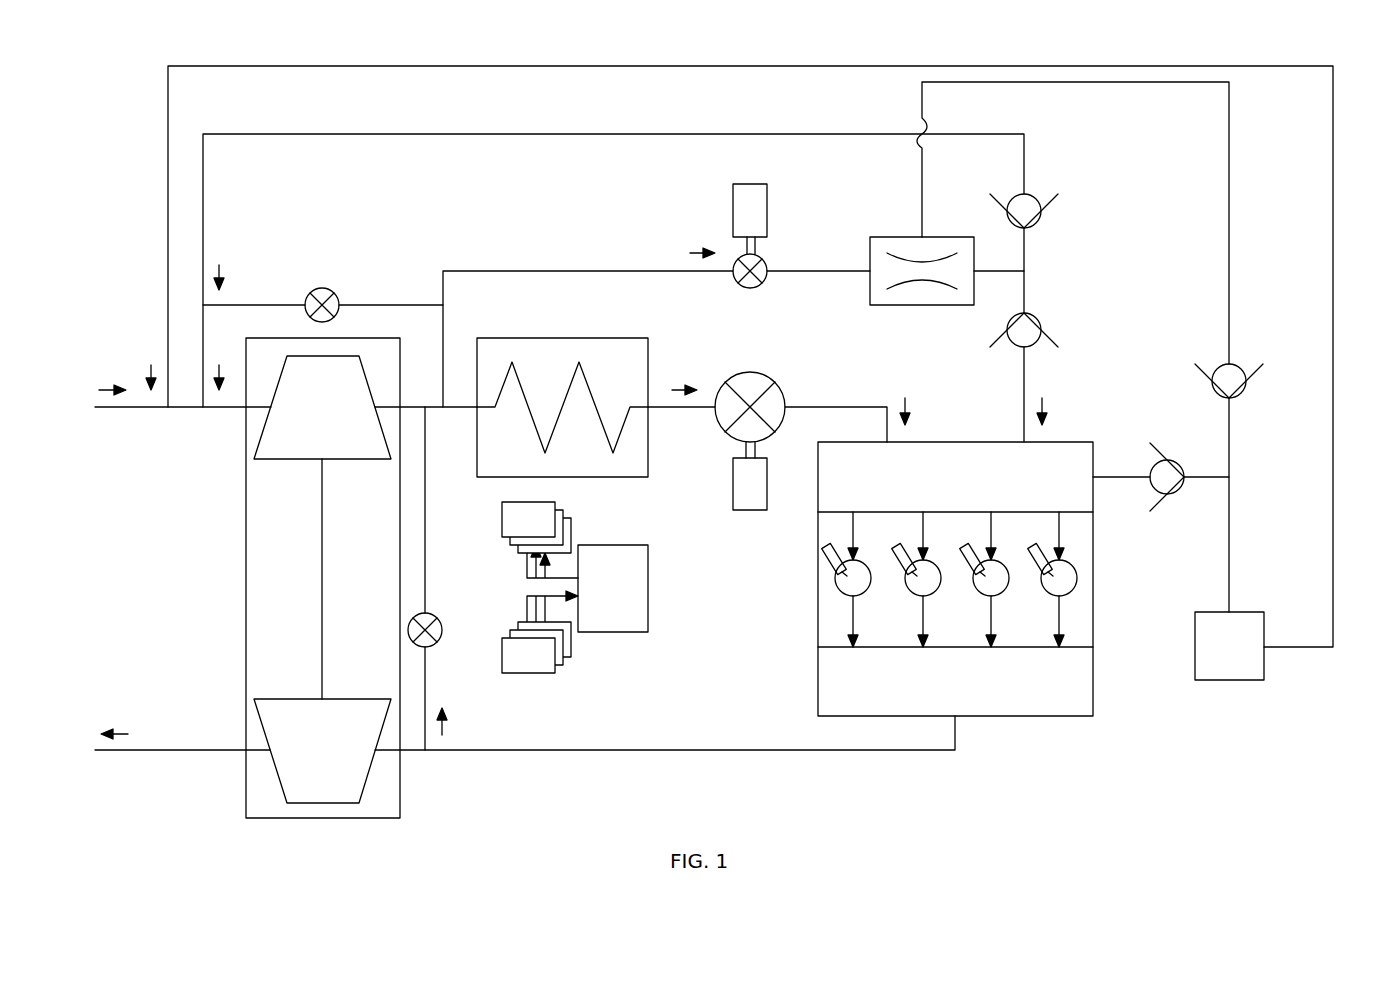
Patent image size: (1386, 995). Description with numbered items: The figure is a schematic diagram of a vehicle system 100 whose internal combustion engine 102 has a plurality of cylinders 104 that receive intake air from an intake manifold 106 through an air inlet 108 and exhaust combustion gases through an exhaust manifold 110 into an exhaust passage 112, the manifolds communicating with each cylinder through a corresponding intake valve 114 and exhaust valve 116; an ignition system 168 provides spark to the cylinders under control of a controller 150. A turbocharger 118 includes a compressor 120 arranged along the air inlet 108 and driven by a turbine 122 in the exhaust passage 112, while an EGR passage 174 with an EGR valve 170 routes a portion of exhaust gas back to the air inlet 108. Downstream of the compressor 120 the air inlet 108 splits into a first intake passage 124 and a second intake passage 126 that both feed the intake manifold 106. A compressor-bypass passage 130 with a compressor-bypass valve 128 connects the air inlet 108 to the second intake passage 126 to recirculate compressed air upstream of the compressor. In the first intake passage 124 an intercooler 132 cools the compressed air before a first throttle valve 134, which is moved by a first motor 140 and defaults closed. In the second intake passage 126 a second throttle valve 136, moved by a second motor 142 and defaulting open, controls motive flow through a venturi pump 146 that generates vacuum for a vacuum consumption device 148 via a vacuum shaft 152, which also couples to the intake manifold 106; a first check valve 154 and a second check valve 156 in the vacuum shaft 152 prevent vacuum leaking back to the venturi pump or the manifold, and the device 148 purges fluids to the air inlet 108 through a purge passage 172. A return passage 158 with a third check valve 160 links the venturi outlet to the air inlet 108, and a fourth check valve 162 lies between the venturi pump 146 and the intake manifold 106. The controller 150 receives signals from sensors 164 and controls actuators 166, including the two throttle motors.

The vehicle system 100 is at (114, 78).
The internal combustion engine 102 is at (1095, 612).
The cylinders 104 is at (1108, 563).
The intake manifold 106 is at (938, 488).
The air inlet 108 is at (133, 411).
The exhaust manifold 110 is at (938, 693).
The exhaust passage 112 is at (648, 751).
The intake valve 114 is at (855, 528).
The exhaust valve 116 is at (855, 611).
The turbocharger 118 is at (246, 587).
The compressor 120 is at (303, 418).
The turbine 122 is at (303, 761).
The first intake passage 124 is at (850, 405).
The second intake passage 126 is at (563, 270).
The compressor-bypass valve 128 is at (322, 288).
The compressor-bypass passage 130 is at (255, 303).
The intercooler 132 is at (558, 337).
The first throttle valve 134 is at (765, 376).
The second throttle valve 136 is at (765, 258).
The first motor 140 is at (768, 480).
The second motor 142 is at (768, 207).
The venturi pump 146 is at (912, 307).
The vacuum consumption device 148 is at (1228, 682).
The controller 150 is at (594, 603).
The vacuum shaft 152 is at (1230, 152).
The first check valve 154 is at (1250, 386).
The second check valve 156 is at (1179, 452).
The return passage 158 is at (643, 132).
The third check valve 160 is at (1043, 209).
The fourth check valve 162 is at (1045, 324).
The sensors 164 is at (509, 666).
The actuators 166 is at (536, 527).
The ignition system 168 is at (826, 548).
The EGR valve 170 is at (442, 632).
The purge passage 172 is at (1334, 307).
The EGR passage 174 is at (427, 590).